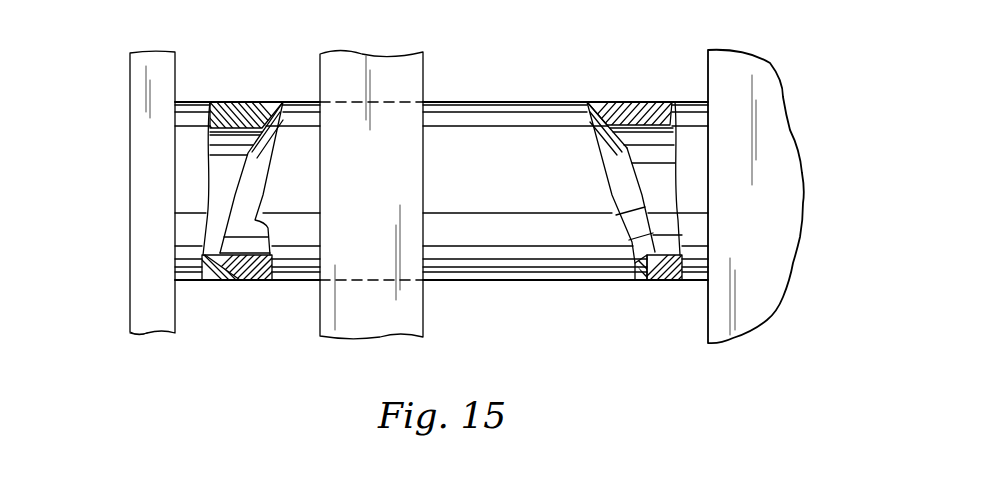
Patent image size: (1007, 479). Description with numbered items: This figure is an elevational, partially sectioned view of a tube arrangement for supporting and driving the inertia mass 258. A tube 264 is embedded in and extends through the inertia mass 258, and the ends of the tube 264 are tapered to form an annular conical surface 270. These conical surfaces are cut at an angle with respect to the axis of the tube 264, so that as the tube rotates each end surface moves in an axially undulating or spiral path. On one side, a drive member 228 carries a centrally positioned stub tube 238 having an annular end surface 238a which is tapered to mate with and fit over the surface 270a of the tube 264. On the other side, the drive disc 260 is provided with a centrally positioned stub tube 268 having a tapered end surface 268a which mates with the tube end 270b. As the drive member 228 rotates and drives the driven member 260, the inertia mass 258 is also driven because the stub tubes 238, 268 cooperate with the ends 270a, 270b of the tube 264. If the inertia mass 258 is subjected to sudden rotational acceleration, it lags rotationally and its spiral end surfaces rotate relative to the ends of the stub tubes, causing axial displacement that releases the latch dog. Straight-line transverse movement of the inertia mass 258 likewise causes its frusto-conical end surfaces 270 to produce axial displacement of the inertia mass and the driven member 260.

The drive member 228 is at (780, 157).
The stub tube 238 is at (640, 101).
The annular end surface 238a is at (598, 122).
The inertia mass 258 is at (412, 70).
The drive disc 260 is at (145, 313).
The tube 264 is at (500, 258).
The stub tube 268 is at (188, 172).
The tapered end surface 268a is at (273, 110).
The annular conical surface 270 is at (617, 175).
The tube end surface 270a is at (643, 280).
The tube end 270b is at (257, 101).